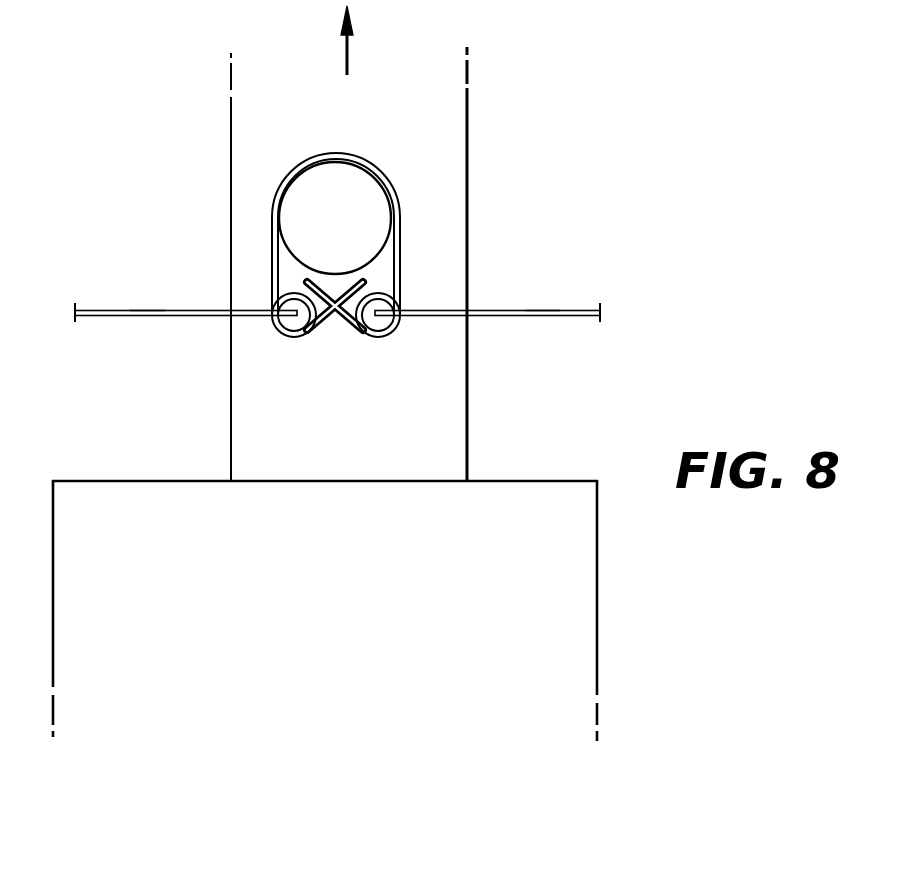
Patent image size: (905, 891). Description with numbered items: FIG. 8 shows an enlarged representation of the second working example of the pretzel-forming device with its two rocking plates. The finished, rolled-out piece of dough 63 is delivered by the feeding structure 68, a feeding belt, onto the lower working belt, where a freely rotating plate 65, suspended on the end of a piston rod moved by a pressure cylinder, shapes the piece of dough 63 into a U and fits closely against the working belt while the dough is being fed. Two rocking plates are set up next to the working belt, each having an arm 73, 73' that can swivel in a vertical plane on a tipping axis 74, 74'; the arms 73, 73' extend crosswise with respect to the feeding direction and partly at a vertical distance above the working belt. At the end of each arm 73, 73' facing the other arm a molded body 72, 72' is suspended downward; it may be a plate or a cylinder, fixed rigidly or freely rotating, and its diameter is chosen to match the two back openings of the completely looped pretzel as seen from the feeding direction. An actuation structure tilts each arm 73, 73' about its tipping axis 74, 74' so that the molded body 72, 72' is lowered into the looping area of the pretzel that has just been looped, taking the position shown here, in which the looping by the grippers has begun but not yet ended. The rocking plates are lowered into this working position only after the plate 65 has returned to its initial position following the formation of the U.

The piece of dough 63 is at (434, 428).
The plate 65 is at (375, 214).
The feeding structure 68 is at (578, 594).
The molded body 72 is at (249, 298).
The molded body 72' is at (404, 298).
The arm 73 is at (181, 293).
The arm 73' is at (493, 291).
The tipping axis 74 is at (144, 285).
The tipping axis 74' is at (530, 285).